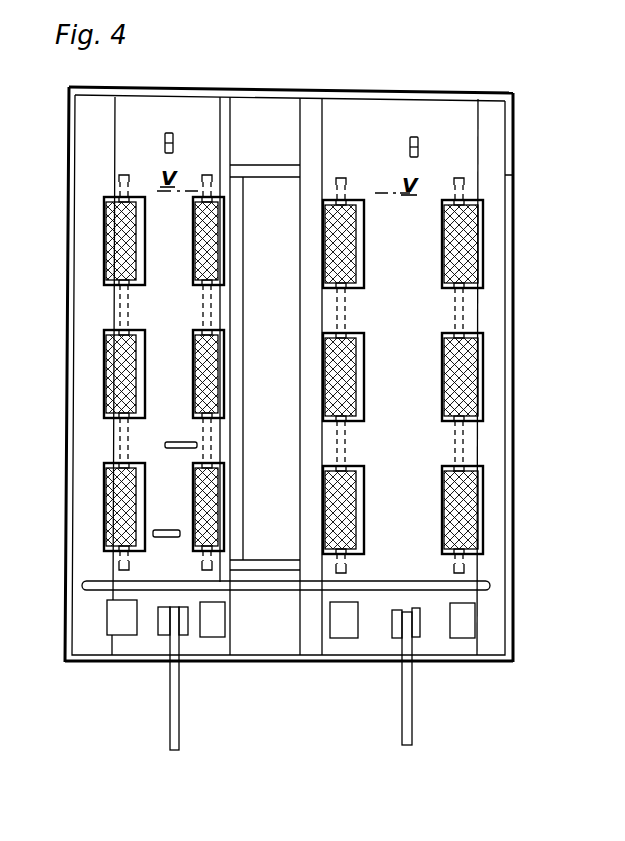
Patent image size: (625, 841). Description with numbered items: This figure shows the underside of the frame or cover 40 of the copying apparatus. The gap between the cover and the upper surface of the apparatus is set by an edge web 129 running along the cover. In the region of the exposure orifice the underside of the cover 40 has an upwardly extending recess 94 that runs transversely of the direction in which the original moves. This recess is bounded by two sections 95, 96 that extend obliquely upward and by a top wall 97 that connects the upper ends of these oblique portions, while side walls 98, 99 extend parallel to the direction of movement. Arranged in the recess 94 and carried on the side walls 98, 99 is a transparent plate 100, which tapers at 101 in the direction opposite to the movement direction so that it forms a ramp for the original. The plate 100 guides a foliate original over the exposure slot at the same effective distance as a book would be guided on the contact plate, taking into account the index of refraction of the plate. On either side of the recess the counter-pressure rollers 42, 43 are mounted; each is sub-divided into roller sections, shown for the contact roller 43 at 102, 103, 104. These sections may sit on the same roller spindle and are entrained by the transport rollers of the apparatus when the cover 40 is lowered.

The frame or cover 40 is at (472, 125).
The counter-pressure roller 42 is at (196, 237).
The counter-pressure roller 43 is at (483, 250).
The recess 94 is at (275, 113).
The oblique section 95 is at (227, 102).
The oblique section 96 is at (320, 117).
The top wall 97 is at (290, 113).
The side wall 98 is at (240, 168).
The side wall 99 is at (265, 571).
The plate 100 is at (255, 420).
The tapered portion 101 is at (233, 303).
The roller section 102 is at (348, 247).
The roller section 103 is at (348, 366).
The roller section 104 is at (347, 527).
The edge web 129 is at (428, 94).